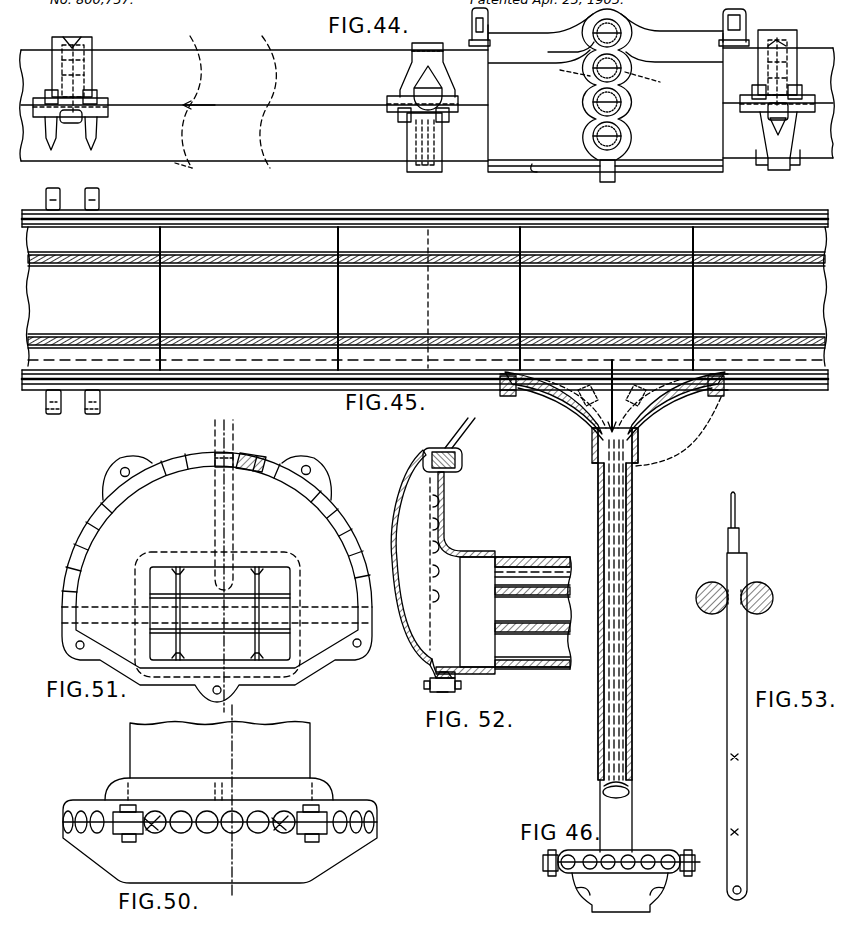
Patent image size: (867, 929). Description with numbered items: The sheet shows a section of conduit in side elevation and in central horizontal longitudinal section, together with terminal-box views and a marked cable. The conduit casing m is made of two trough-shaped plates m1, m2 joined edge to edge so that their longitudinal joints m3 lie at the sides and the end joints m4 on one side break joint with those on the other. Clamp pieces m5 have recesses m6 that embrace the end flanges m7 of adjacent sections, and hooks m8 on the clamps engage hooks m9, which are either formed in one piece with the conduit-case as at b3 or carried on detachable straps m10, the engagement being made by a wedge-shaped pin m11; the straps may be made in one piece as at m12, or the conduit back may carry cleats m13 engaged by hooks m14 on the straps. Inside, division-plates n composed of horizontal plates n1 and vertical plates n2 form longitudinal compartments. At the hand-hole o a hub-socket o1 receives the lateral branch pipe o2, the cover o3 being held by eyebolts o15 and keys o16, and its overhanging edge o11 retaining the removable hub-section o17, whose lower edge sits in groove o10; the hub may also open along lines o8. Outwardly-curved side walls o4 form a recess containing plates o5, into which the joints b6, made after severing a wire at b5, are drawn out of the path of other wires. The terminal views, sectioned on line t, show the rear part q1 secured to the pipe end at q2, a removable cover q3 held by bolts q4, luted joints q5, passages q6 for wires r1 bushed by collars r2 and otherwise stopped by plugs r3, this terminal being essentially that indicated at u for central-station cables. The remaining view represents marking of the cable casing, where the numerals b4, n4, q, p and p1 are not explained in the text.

In FIG. 44, the casing m is at (266, 95).
In FIG. 44, the trough-shaped plate m1 is at (194, 94).
In FIG. 44, the trough-shaped plate m2 is at (192, 168).
In FIG. 44, the longitudinal joint m3 is at (207, 98).
In FIG. 44, the end joint m4 is at (78, 38).
In FIG. 44, the clamp piece m5 is at (92, 47).
In FIG. 44, the recess m6 is at (70, 45).
In FIG. 44, the end flange m7 is at (92, 67).
In FIG. 44, the hook m8 is at (70, 125).
In FIG. 44, the hook m9 is at (88, 118).
In FIG. 44, the detachable strap m10 is at (444, 72).
In FIG. 44, the wedge-shaped pin m11 is at (100, 103).
In FIG. 44, the one-piece strap m12 is at (418, 45).
In FIG. 44, the cleat m13 is at (798, 158).
In FIG. 44, the hook m14 is at (762, 165).
In FIG. 44, the hand-hole o is at (605, 90).
In FIG. 45, the hand-hole o is at (426, 337).
In FIG. 44, the hub-socket o1 is at (622, 102).
In FIG. 46, the hub-socket o1 is at (592, 455).
In FIG. 44, the lateral branch connection o2 is at (622, 136).
In FIG. 46, the lateral branch connection o2 is at (598, 512).
In FIG. 44, the cover o3 is at (667, 43).
In FIG. 44, the outwardly-curved side wall o4 is at (603, 101).
In FIG. 46, the outwardly-curved side wall o4 is at (556, 392).
In FIG. 46, the plate o5 is at (591, 389).
In FIG. 44, the hub-dividing line o8 is at (607, 184).
In FIG. 46, the hub-dividing line o8 is at (614, 382).
In FIG. 44, the groove o10 is at (532, 166).
In FIG. 44, the overhanging edge o11 is at (510, 58).
In FIG. 44, the eyebolt o15 is at (489, 10).
In FIG. 44, the key o16 is at (489, 26).
In FIG. 44, the hub-section o17 is at (685, 123).
In FIG. 46, the hub-section o17 is at (679, 430).
In FIG. 45, the integral hook b3 is at (73, 291).
In FIG. 44, the frame bracket b4 is at (405, 57).
In FIG. 45, the frame bracket b4 is at (777, 191).
In FIG. 46, the severing point b5 is at (613, 370).
In FIG. 46, the wire joint b6 is at (585, 412).
In FIG. 51, the division-plate n is at (258, 612).
In FIG. 52, the division-plate n is at (505, 662).
In FIG. 45, the horizontal plate n1 is at (426, 298).
In FIG. 51, the horizontal plate n1 is at (259, 590).
In FIG. 45, the vertical plate n2 is at (470, 262).
In FIG. 51, the vertical plate n2 is at (254, 648).
In FIG. 51, the beam clip n4 is at (181, 572).
In FIG. 50, the column q is at (220, 826).
In FIG. 46, the rear part q1 is at (636, 852).
In FIG. 51, the rear part q1 is at (178, 550).
In FIG. 52, the rear part q1 is at (462, 561).
In FIG. 50, the rear part q1 is at (258, 808).
In FIG. 52, the securing connection q2 is at (496, 556).
In FIG. 46, the removable cover q3 is at (620, 892).
In FIG. 52, the removable cover q3 is at (400, 500).
In FIG. 50, the removable cover q3 is at (220, 841).
In FIG. 46, the bolt q4 is at (546, 870).
In FIG. 52, the bolt q4 is at (424, 687).
In FIG. 50, the bolt q4 is at (126, 842).
In FIG. 46, the joint q5 is at (637, 861).
In FIG. 52, the joint q5 is at (440, 664).
In FIG. 50, the joint q5 is at (378, 822).
In FIG. 51, the orifice q6 is at (172, 470).
In FIG. 51, the wire or cable r1 is at (228, 500).
In FIG. 52, the wire or cable r1 is at (438, 450).
In FIG. 51, the collar r2 is at (216, 454).
In FIG. 52, the collar r2 is at (462, 452).
In FIG. 51, the plug r3 is at (258, 456).
In FIG. 51, the section line t is at (224, 569).
In FIG. 50, the section line t is at (233, 809).
In FIG. 53, the rod p is at (731, 757).
In FIG. 53, the rod ball p1 is at (708, 612).
In FIG. 46, the conduit-terminal u is at (626, 922).